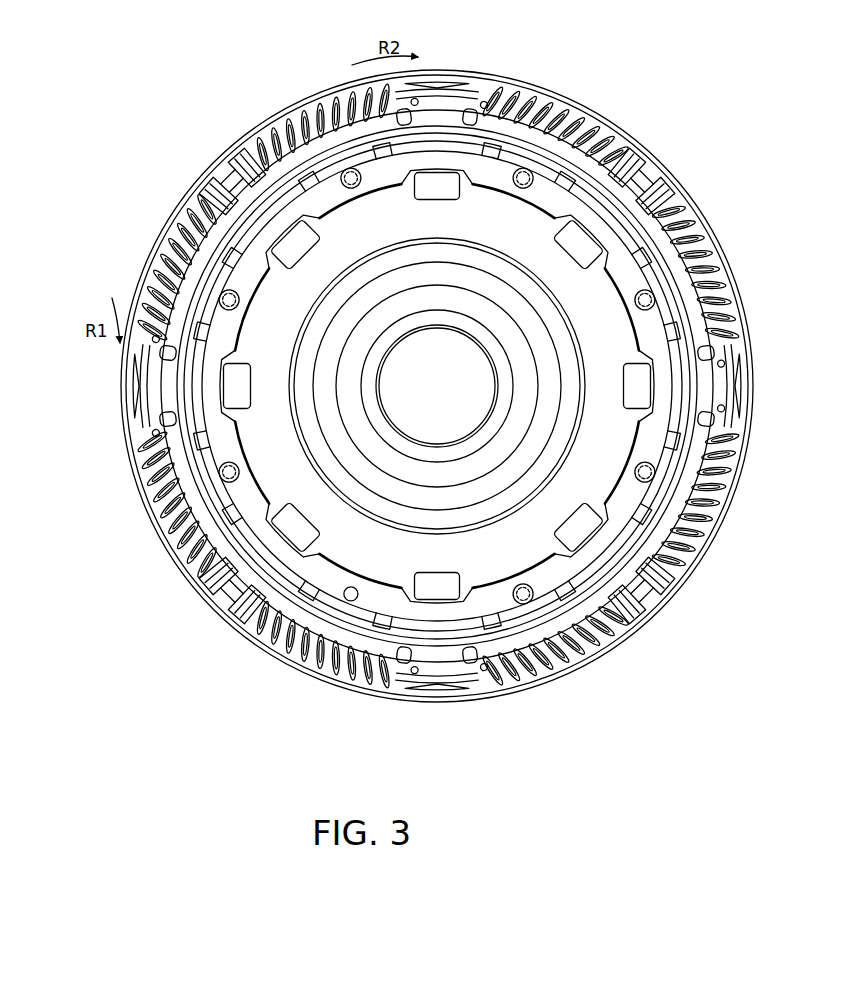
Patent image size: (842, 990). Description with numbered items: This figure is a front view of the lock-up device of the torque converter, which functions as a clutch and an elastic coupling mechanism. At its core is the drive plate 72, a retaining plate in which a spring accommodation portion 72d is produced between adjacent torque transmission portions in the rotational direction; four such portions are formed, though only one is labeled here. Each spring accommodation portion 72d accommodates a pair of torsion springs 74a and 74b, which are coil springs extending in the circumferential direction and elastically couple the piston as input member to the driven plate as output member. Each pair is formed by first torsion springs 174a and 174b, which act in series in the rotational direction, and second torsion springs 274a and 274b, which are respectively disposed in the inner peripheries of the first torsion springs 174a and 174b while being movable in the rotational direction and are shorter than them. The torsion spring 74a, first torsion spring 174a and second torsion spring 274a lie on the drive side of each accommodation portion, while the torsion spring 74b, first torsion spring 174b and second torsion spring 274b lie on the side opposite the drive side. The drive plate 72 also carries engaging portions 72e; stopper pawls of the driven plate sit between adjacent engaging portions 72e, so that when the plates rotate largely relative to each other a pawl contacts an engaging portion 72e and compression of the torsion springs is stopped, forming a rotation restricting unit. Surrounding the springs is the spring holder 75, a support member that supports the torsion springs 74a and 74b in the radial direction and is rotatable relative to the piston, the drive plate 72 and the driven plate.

The drive plate 72 is at (165, 387).
The spring accommodation portion 72d is at (374, 710).
The engaging portion 72e is at (309, 156).
The torsion spring 74a is at (152, 272).
The first torsion spring 174a is at (158, 222).
The second torsion spring 274a is at (155, 258).
The torsion spring 74b is at (319, 98).
The first torsion spring 174b is at (286, 112).
The second torsion spring 274b is at (340, 90).
The spring holder 75 is at (233, 157).